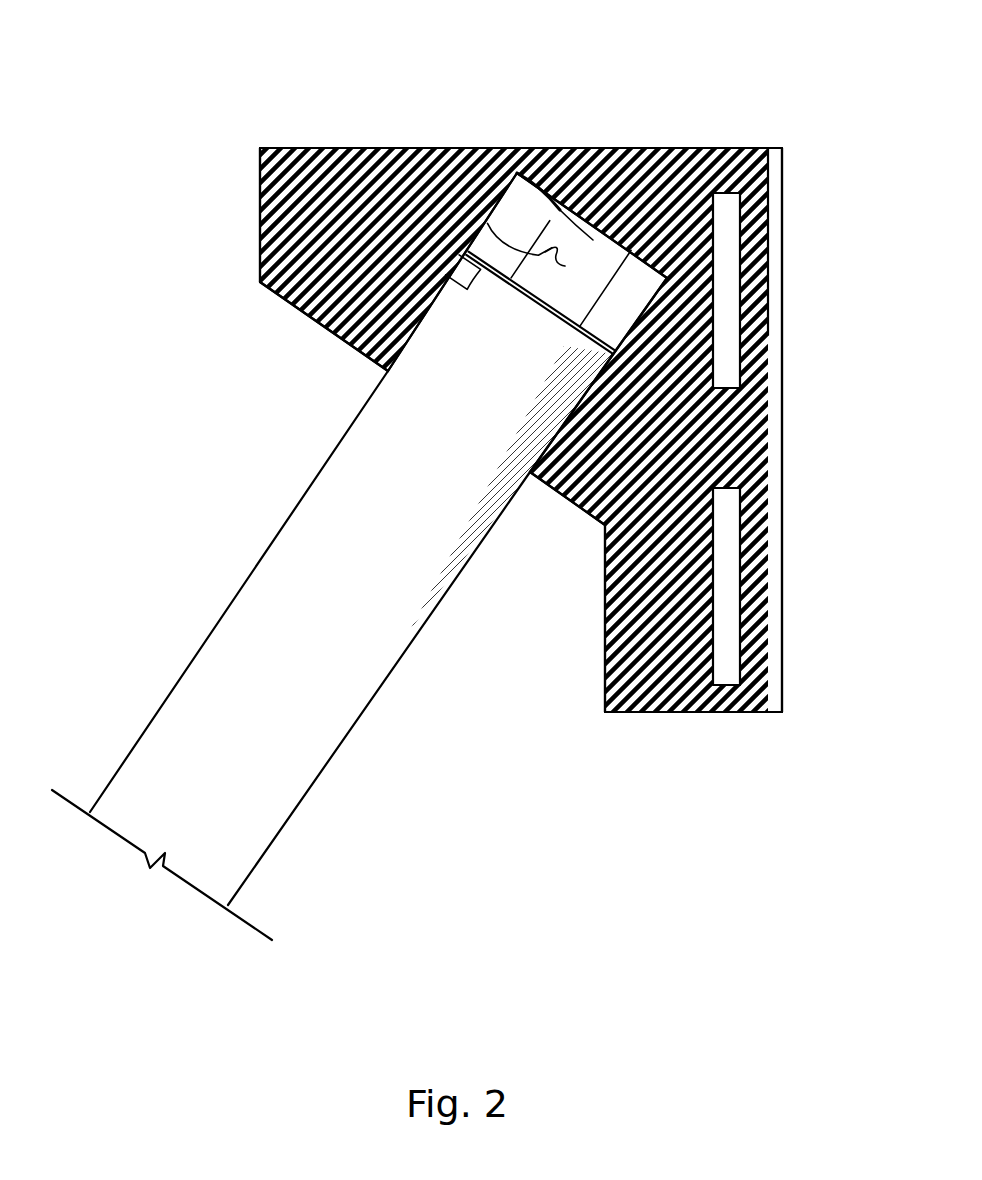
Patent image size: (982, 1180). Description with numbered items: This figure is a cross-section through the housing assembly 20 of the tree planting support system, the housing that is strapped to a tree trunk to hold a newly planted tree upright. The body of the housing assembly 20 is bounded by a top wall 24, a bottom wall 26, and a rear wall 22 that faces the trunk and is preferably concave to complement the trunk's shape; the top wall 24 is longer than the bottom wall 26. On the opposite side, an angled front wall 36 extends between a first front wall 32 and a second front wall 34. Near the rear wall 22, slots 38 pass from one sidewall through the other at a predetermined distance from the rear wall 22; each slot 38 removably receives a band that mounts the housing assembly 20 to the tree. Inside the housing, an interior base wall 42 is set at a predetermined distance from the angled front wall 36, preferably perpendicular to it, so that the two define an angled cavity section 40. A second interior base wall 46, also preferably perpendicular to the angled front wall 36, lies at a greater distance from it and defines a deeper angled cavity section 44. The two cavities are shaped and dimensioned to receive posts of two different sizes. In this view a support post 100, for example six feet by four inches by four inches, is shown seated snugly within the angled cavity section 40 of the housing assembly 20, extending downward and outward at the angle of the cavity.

The housing assembly 20 is at (553, 148).
The rear wall 22 is at (773, 201).
The top wall 24 is at (647, 148).
The bottom wall 26 is at (655, 712).
The first front wall 32 is at (260, 190).
The second front wall 34 is at (605, 648).
The angled front wall 36 is at (295, 307).
The slot 38 is at (737, 298).
The angled cavity section 40 is at (409, 340).
The interior base wall 42 is at (453, 262).
The angled cavity section 44 is at (485, 222).
The interior base wall 46 is at (517, 173).
The support post 100 is at (306, 790).